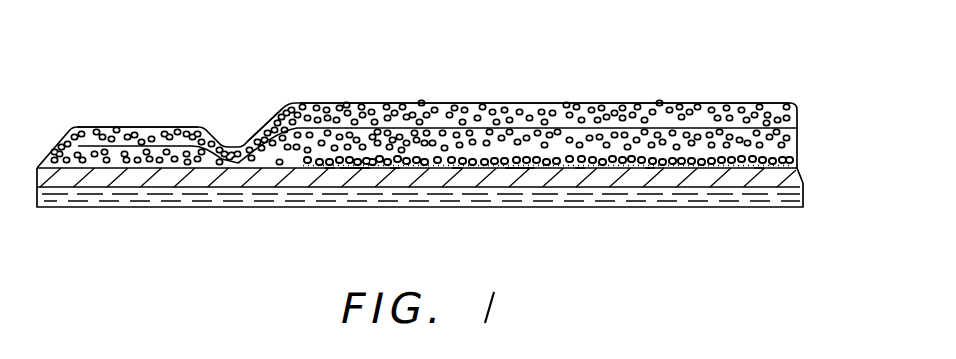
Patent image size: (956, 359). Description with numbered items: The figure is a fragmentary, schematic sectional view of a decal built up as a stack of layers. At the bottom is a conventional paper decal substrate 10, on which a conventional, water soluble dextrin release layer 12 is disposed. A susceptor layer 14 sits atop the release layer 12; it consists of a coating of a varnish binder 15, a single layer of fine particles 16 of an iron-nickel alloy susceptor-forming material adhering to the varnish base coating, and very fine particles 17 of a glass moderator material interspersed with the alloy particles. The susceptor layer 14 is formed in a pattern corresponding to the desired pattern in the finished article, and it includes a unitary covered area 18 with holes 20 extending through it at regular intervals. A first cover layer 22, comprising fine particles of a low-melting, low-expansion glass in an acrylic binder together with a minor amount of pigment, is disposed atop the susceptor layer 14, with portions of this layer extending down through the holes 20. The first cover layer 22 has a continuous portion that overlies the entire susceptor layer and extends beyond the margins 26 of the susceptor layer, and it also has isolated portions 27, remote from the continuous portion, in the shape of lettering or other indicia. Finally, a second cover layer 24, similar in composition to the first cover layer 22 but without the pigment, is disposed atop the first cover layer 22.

The paper decal substrate 10 is at (710, 203).
The release layer 12 is at (780, 177).
The susceptor layer 14 is at (798, 158).
The varnish binder 15 is at (358, 168).
The fine particles of iron-nickel alloy susceptor-forming material 16 is at (520, 168).
The very fine particles of glass moderator material 17 is at (330, 167).
The unitary covered area 18 is at (562, 152).
The holes 20 is at (410, 160).
The first cover layer 22 is at (796, 137).
The second cover layer 24 is at (797, 112).
The margins 26 is at (285, 113).
The isolated portions 27 is at (137, 160).